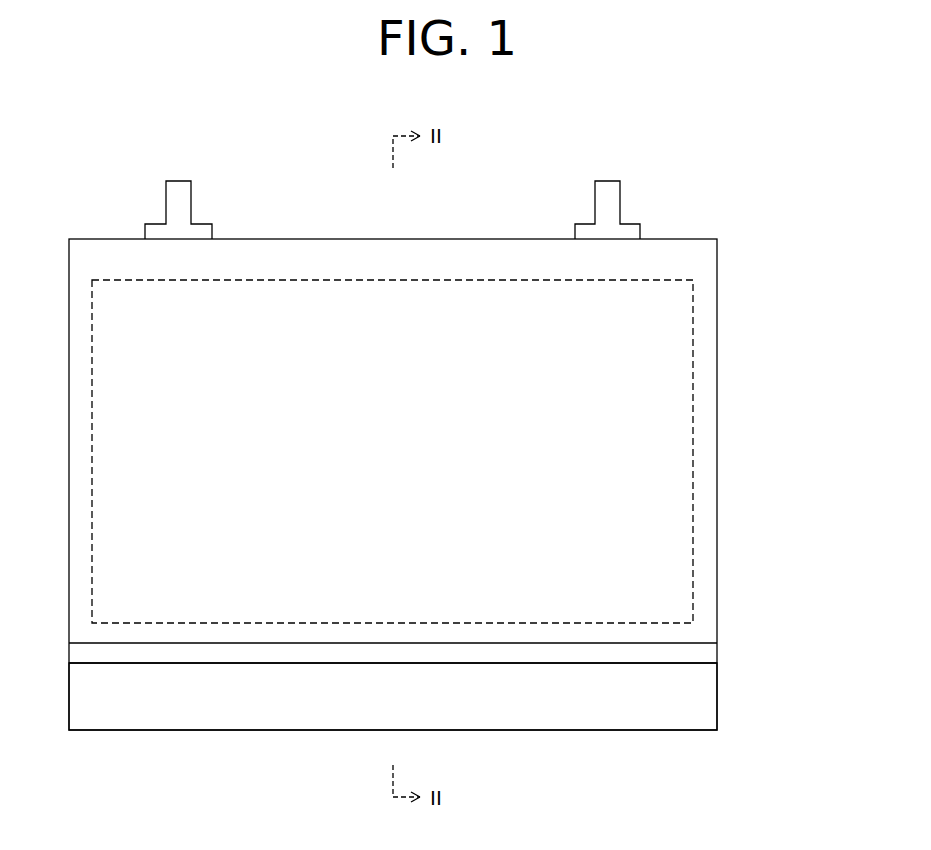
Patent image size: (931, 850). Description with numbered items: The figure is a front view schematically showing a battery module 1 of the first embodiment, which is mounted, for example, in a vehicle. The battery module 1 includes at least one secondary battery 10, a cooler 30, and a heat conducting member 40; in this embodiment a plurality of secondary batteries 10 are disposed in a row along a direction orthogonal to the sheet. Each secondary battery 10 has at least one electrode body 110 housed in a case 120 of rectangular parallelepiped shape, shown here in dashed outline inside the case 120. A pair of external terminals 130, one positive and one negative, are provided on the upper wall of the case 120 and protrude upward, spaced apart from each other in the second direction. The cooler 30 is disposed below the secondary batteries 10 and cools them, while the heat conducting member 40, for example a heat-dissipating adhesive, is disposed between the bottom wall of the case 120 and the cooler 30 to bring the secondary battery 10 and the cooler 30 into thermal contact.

The battery module 1 is at (88, 189).
The secondary battery 10 is at (785, 185).
The electrode body 110 is at (693, 278).
The case 120 is at (717, 240).
The external terminals 130 is at (620, 203).
The heat conducting member 40 is at (700, 655).
The cooler 30 is at (700, 697).